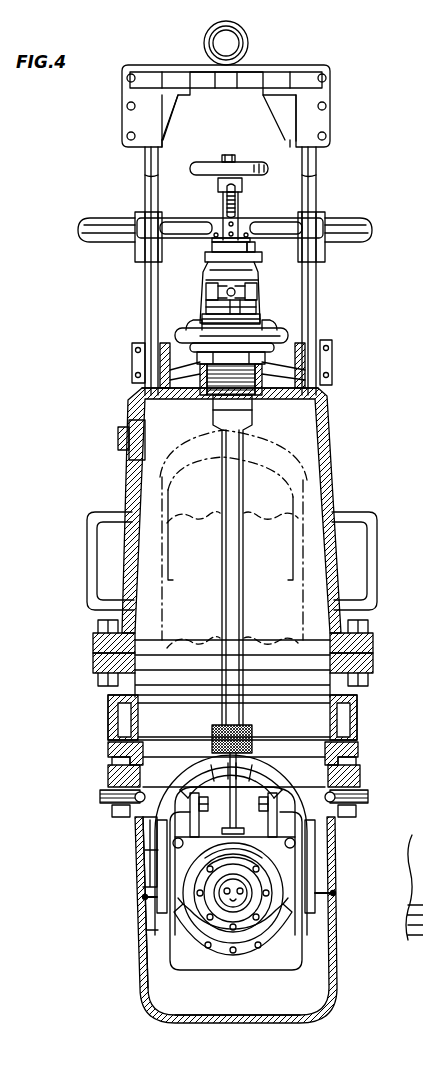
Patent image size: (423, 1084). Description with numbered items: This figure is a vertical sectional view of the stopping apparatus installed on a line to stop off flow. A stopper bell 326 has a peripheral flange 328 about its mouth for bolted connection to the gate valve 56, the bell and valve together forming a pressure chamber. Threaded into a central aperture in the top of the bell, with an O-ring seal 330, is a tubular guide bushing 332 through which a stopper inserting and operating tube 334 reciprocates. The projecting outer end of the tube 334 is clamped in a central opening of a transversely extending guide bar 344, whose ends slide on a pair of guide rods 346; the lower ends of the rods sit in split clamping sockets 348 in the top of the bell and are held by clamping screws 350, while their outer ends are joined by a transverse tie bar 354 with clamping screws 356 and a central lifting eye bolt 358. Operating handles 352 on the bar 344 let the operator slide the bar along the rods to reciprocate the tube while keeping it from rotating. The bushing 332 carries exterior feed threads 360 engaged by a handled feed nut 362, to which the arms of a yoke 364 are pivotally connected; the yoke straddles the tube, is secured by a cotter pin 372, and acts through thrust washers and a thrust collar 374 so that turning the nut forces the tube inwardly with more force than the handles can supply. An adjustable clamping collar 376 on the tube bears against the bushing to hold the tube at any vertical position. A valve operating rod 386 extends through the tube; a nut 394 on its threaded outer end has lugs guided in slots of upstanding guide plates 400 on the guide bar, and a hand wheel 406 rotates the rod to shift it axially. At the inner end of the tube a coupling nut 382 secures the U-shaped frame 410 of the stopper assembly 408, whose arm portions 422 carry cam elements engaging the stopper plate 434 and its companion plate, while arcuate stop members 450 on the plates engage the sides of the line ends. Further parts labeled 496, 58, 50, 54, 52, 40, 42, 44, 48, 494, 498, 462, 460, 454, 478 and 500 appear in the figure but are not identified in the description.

The lifting eye bolt 358 is at (246, 40).
The tie bar 354 is at (264, 66).
The clamping screws 356 is at (326, 136).
The guide rods 346 is at (145, 295).
The hand wheel 406 is at (197, 162).
The nut 394 is at (243, 185).
The guide plates 400 is at (240, 205).
The guide bar 344 is at (188, 218).
The operating handles 352 is at (96, 222).
The cotter pin 372 is at (212, 248).
The thrust collar 374 is at (256, 245).
The yoke 364 is at (258, 287).
The adjustable clamping collar 376 is at (207, 292).
The feed threads 360 is at (248, 304).
The feed nut 362 is at (280, 328).
The O-ring seal 330 is at (266, 358).
The guide bushing 332 is at (262, 348).
The stopper bell 326 is at (333, 452).
The split clamping sockets 348 is at (327, 392).
The clamping screws 350 is at (135, 375).
The boss 496 is at (118, 440).
The stopper inserting and operating tube 334 is at (245, 493).
The peripheral flange 328 is at (373, 645).
The gate valve 56 is at (358, 702).
The flange 58 is at (108, 750).
The flange 50 is at (338, 757).
The flange plate 54 is at (360, 766).
The bolt 52 is at (363, 790).
The lower housing 40 is at (128, 851).
The housing wall 42 is at (138, 868).
The bottom wall 44 is at (138, 947).
The stopper plate 434 is at (167, 927).
The arm portions 422 is at (142, 897).
The coupling nut 382 is at (252, 744).
The U-shaped frame 410 is at (192, 750).
The bracket 48 is at (153, 800).
The valve operating rod 386 is at (214, 815).
The bearing block 494 is at (250, 795).
The mounting plate 498 is at (230, 891).
The stop members 450 is at (256, 853).
The bearing housing 462 is at (264, 897).
The retaining ring 460 is at (276, 920).
The bearing ring 454 is at (243, 907).
The hub 478 is at (222, 905).
The bolts 500 is at (222, 950).
The stopper assembly 408 is at (275, 958).